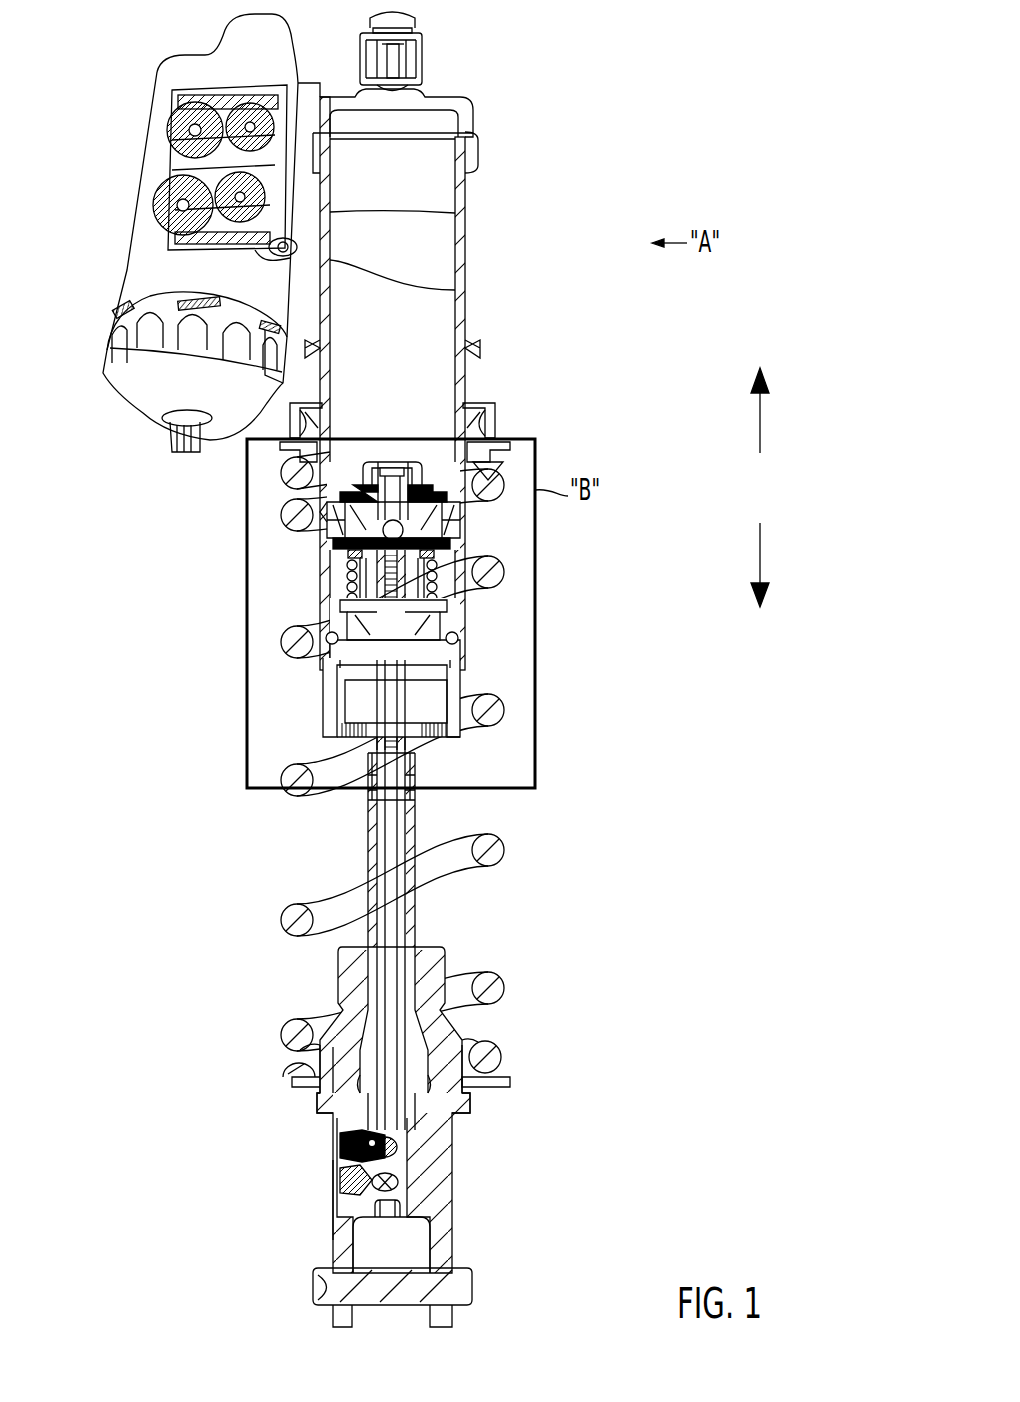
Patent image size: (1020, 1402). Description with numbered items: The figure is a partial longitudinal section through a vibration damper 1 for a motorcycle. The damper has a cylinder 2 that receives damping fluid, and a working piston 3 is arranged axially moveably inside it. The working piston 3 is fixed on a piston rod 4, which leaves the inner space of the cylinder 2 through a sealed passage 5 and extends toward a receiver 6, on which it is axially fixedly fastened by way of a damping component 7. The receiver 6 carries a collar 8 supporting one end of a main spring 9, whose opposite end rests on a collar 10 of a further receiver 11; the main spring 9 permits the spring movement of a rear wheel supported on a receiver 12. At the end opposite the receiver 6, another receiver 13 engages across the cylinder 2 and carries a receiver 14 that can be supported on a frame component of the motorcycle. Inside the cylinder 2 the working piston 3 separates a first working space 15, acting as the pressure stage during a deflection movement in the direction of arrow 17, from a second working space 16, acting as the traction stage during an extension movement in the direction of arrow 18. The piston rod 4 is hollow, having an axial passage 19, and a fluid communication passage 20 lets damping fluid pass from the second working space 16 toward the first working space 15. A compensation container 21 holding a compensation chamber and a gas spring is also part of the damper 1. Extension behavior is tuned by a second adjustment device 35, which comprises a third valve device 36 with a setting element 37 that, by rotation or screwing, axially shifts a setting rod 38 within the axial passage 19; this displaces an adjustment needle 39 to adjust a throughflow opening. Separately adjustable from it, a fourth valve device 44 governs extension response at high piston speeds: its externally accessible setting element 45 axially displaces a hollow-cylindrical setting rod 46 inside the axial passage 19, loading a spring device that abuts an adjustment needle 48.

The vibration damper 1 is at (150, 943).
The cylinder 2 is at (466, 296).
The working piston 3 is at (440, 537).
The piston rod 4 is at (416, 902).
The passage 5 is at (358, 800).
The receiver 6 is at (440, 1190).
The damping component 7 is at (440, 960).
The collar 8 is at (480, 1078).
The main spring 9 is at (504, 850).
The collar 10 is at (495, 455).
The receiver 11 is at (492, 415).
The receiver 12 is at (455, 1290).
The receiver 13 is at (463, 107).
The receiver 14 is at (425, 58).
The first working space 15 is at (440, 330).
The second working space 16 is at (342, 586).
The arrow 17 is at (760, 419).
The arrow 18 is at (760, 559).
The axial passage 19 is at (365, 902).
The fluid communication passage 20 is at (330, 520).
The compensation container 21 is at (150, 268).
The second adjustment device 35 is at (222, 1181).
The third valve device 36 is at (213, 1081).
The setting element 37 is at (328, 1143).
The setting rod 38 is at (398, 932).
The adjustment needle 39 is at (455, 665).
The fourth valve device 44 is at (220, 1218).
The setting element 45 is at (328, 1178).
The setting rod 46 is at (430, 790).
The adjustment needle 48 is at (455, 630).